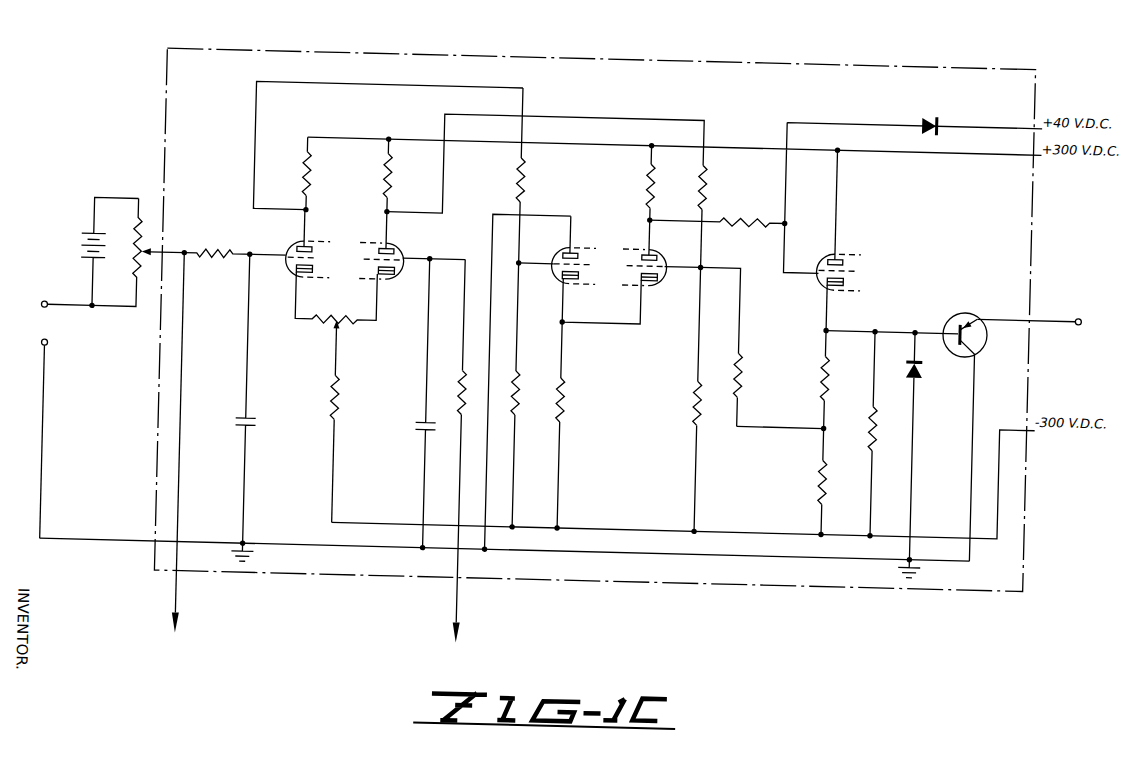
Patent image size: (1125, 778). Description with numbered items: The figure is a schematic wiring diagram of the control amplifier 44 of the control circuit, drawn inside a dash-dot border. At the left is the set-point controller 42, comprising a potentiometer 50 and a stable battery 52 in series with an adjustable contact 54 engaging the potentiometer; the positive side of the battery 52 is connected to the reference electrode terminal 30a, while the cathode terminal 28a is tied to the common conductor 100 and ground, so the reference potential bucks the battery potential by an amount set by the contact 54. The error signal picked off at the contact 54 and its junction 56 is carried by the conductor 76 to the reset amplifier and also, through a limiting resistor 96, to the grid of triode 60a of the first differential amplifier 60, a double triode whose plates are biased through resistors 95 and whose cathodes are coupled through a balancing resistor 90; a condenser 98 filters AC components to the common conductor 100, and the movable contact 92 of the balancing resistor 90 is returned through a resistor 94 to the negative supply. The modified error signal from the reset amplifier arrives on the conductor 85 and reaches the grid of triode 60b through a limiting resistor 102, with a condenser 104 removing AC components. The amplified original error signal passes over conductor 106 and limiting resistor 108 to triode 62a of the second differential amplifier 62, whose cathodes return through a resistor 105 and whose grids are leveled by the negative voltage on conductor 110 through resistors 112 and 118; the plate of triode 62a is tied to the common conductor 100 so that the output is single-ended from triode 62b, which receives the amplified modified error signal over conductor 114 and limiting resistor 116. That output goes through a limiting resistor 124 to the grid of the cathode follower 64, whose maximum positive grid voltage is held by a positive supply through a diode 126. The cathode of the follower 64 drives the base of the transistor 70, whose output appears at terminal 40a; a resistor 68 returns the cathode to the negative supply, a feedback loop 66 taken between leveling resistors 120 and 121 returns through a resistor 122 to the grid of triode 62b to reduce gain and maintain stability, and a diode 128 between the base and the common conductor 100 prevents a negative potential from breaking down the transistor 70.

The control amplifier 44 is at (349, 43).
The conductor 106 is at (260, 106).
The limiting resistor 108 is at (524, 168).
The resistors 95 is at (374, 168).
The first amplifier 60 is at (348, 245).
The triode 60a is at (295, 244).
The triode 60b is at (399, 241).
The potentiometer 50 is at (146, 262).
The adjustable contact 54 is at (184, 247).
The junction 56 is at (191, 250).
The conductor 76 is at (193, 596).
The limiting resistor 96 is at (221, 246).
The condenser 98 is at (268, 409).
The condenser 104 is at (429, 418).
The limiting resistor 102 is at (464, 371).
The conductor 85 is at (475, 590).
The balancing resistor 90 is at (338, 314).
The movable contact 92 is at (350, 322).
The resistor 94 is at (352, 383).
The conductor 110 is at (543, 507).
The common conductor 100 is at (285, 534).
The cathode terminal 28a is at (24, 434).
The reference electrode terminal 30a is at (48, 302).
The battery 52 is at (92, 241).
The set-point controller 42 is at (155, 222).
The second differential amplifier 62 is at (612, 250).
The triode 62a is at (569, 236).
The triode 62b is at (666, 235).
The conductor 114 is at (663, 102).
The limiting resistor 116 is at (710, 160).
The limiting resistor 124 is at (736, 197).
The diode 126 is at (930, 95).
The cathode follower 64 is at (853, 241).
The leveling resistor 120 is at (831, 361).
The resistor 122 is at (757, 348).
The feedback loop 66 is at (790, 409).
The leveling resistor 121 is at (832, 463).
The resistor 68 is at (878, 414).
The diode 128 is at (929, 348).
The transistor 70 is at (985, 290).
The output terminal 40a is at (1035, 336).
The resistor 105 is at (576, 384).
The resistor 112 is at (529, 368).
The resistor 118 is at (703, 383).